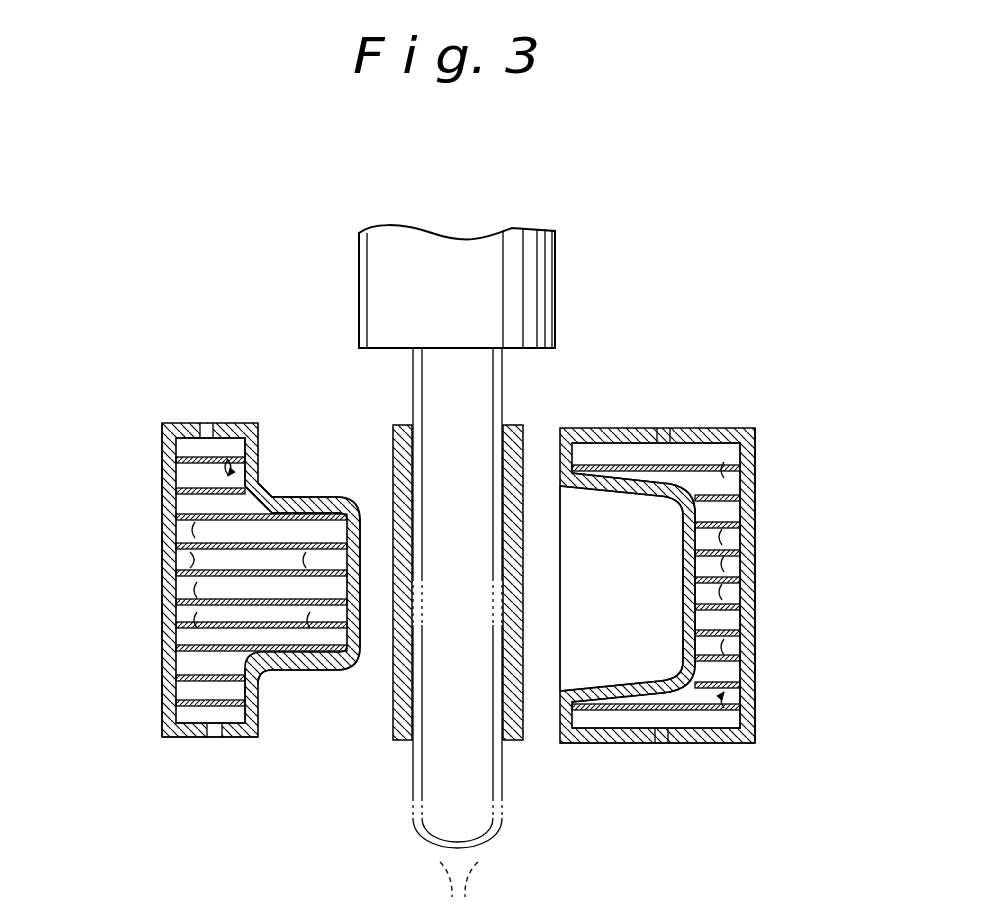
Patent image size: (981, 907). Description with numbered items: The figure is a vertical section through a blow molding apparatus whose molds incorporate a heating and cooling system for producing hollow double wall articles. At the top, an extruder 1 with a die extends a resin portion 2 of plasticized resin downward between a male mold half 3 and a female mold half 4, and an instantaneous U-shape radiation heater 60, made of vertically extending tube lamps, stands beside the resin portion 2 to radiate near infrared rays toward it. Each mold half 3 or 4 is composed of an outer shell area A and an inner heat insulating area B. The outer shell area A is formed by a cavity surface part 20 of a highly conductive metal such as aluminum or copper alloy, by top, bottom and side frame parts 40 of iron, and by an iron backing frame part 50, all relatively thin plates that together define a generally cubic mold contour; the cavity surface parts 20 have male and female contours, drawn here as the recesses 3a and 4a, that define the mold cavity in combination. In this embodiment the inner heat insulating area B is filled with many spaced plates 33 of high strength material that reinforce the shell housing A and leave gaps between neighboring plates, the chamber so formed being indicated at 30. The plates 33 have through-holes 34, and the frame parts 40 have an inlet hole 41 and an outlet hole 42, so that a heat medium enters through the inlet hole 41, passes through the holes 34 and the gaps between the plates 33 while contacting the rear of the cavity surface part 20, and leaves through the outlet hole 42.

The extruder 1 is at (385, 282).
The resin portion 2 is at (490, 848).
The male mold half 3 is at (240, 750).
The mold cavity of left mold 3a is at (310, 668).
The female mold half 4 is at (728, 754).
The mold cavity of right mold 4a is at (683, 606).
The cavity surface part 20 is at (256, 471).
The cooling chamber 30 is at (187, 505).
The spaced plates 33 is at (176, 640).
The through-holes 34 is at (185, 712).
The frame parts 40 is at (222, 430).
The inlet hole 41 is at (212, 752).
The outlet hole 42 is at (205, 418).
The backing frame part 50 is at (176, 530).
The instantaneous U-shape radiation heater 60 is at (521, 425).
The outer shell area A is at (260, 738).
The inner heat insulating area B is at (184, 560).